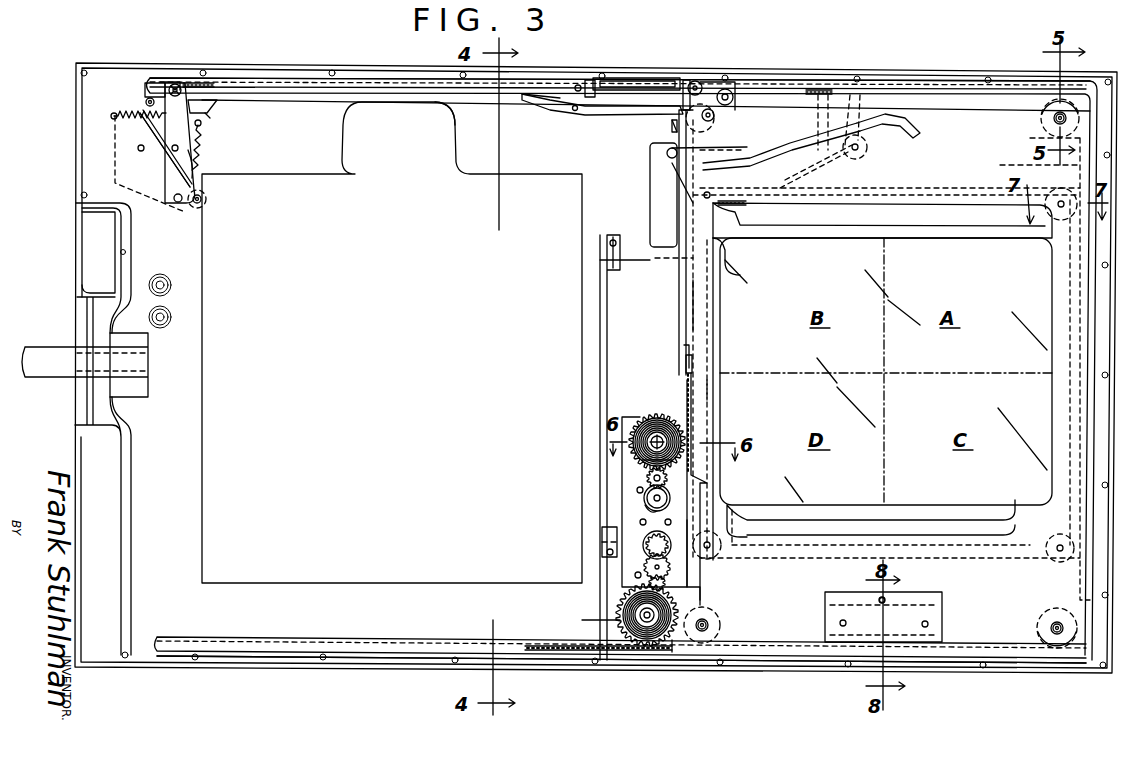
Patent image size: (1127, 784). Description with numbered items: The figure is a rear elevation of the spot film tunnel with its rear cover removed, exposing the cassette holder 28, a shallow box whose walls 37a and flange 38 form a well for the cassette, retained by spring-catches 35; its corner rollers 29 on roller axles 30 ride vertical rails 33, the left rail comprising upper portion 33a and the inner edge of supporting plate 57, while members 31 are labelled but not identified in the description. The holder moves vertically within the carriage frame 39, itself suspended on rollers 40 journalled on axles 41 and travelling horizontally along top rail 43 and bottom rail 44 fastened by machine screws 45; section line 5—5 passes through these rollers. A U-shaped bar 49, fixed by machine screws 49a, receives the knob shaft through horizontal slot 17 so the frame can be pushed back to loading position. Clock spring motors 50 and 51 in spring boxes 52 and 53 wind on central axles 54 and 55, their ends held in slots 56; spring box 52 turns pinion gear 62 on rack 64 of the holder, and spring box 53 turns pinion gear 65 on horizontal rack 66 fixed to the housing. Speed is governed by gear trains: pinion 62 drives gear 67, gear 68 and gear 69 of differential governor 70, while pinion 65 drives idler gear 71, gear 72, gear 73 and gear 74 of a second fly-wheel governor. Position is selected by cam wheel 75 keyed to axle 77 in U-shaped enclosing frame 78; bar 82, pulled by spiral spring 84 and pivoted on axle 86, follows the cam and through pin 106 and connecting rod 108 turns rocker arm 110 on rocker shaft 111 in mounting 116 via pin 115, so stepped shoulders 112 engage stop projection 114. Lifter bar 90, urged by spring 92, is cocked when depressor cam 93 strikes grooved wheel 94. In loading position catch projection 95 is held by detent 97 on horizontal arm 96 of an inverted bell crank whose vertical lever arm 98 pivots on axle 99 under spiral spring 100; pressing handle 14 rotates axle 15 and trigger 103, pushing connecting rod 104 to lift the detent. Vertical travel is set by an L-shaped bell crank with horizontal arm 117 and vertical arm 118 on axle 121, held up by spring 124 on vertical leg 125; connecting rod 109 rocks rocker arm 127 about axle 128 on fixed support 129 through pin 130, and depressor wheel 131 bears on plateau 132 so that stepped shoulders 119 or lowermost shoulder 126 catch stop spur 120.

The section line 5 is at (50, 352).
The handle 14 is at (857, 160).
The rotatable axle 15 is at (860, 152).
The horizontal slot 17 is at (400, 637).
The cassette holder 28 is at (686, 378).
The rollers 29 is at (1052, 195).
The roller axles 30 is at (712, 572).
The frame bar 31 is at (740, 212).
The vertical rails 33 is at (1060, 162).
The upper portion of left vertical rail 33a is at (657, 415).
The spring-catch 35 is at (893, 205).
The walls 37a is at (853, 205).
The flange 38 is at (805, 205).
The cassette holder carriage frame 39 is at (955, 168).
The rollers 40 is at (712, 125).
The axles 41 is at (1054, 120).
The top rail 43 is at (963, 65).
The bottom rail 44 is at (813, 653).
The machine screws 45 is at (330, 83).
The U-shaped bar 49 is at (930, 605).
The machine screws 49a is at (878, 603).
The clock spring motor 50 is at (643, 447).
The clock spring motor 51 is at (640, 613).
The circular spring box 52 is at (655, 432).
The circular spring box 53 is at (622, 625).
The central axle 54 is at (657, 433).
The central axle 55 is at (628, 607).
The slots 56 is at (640, 468).
The supporting plate 57 is at (633, 490).
The pinion gear 62 is at (640, 452).
The rack 64 is at (707, 393).
The pinion gear 65 is at (647, 645).
The horizontal rack 66 is at (587, 650).
The gear 67 is at (670, 477).
The gear 68 is at (670, 495).
The gear 69 is at (645, 510).
The differential governor 70 is at (645, 520).
The idler gear 71 is at (673, 582).
The gear 72 is at (643, 567).
The gear 73 is at (606, 553).
The gear 74 is at (648, 541).
The cam wheel 75 is at (158, 143).
The rotatable axle 77 is at (150, 142).
The U-shaped enclosing frame 78 is at (138, 150).
The bar 82 is at (180, 160).
The spiral spring 84 is at (135, 117).
The axle 86 is at (176, 202).
The lifter bar 90 is at (192, 173).
The spring 92 is at (198, 150).
The depressor cam 93 is at (648, 182).
The grooved wheel 94 is at (207, 200).
The catch projection 95 is at (672, 128).
The horizontal arm 96 is at (215, 103).
The detent 97 is at (208, 115).
The vertical lever arm 98 is at (145, 90).
The axle 99 is at (146, 103).
The spiral spring 100 is at (160, 82).
The trigger 103 is at (842, 118).
The connecting rod 104 is at (193, 80).
The pin 106 is at (174, 84).
The connecting rod 108 is at (456, 108).
The connecting rod 109 is at (620, 90).
The rocker arm 110 is at (565, 112).
The rocker shaft 111 is at (577, 110).
The stepped shoulders 112 is at (527, 107).
The stop projection 114 is at (674, 126).
The pin 115 is at (577, 82).
The mounting 116 is at (595, 80).
The horizontal arm 117 is at (747, 187).
The vertical arm 118 is at (678, 298).
The stepped shoulders 119 is at (686, 365).
The stop spur 120 is at (697, 310).
The axle 121 is at (667, 153).
The spring 124 is at (722, 200).
The vertical leg 125 is at (725, 178).
The lowermost shoulder 126 is at (686, 367).
The rocker arm 127 is at (732, 93).
The axle 128 is at (733, 82).
The fixed support 129 is at (687, 80).
The pin 130 is at (700, 82).
The depressor wheel 131 is at (714, 118).
The plateau 132 is at (912, 120).